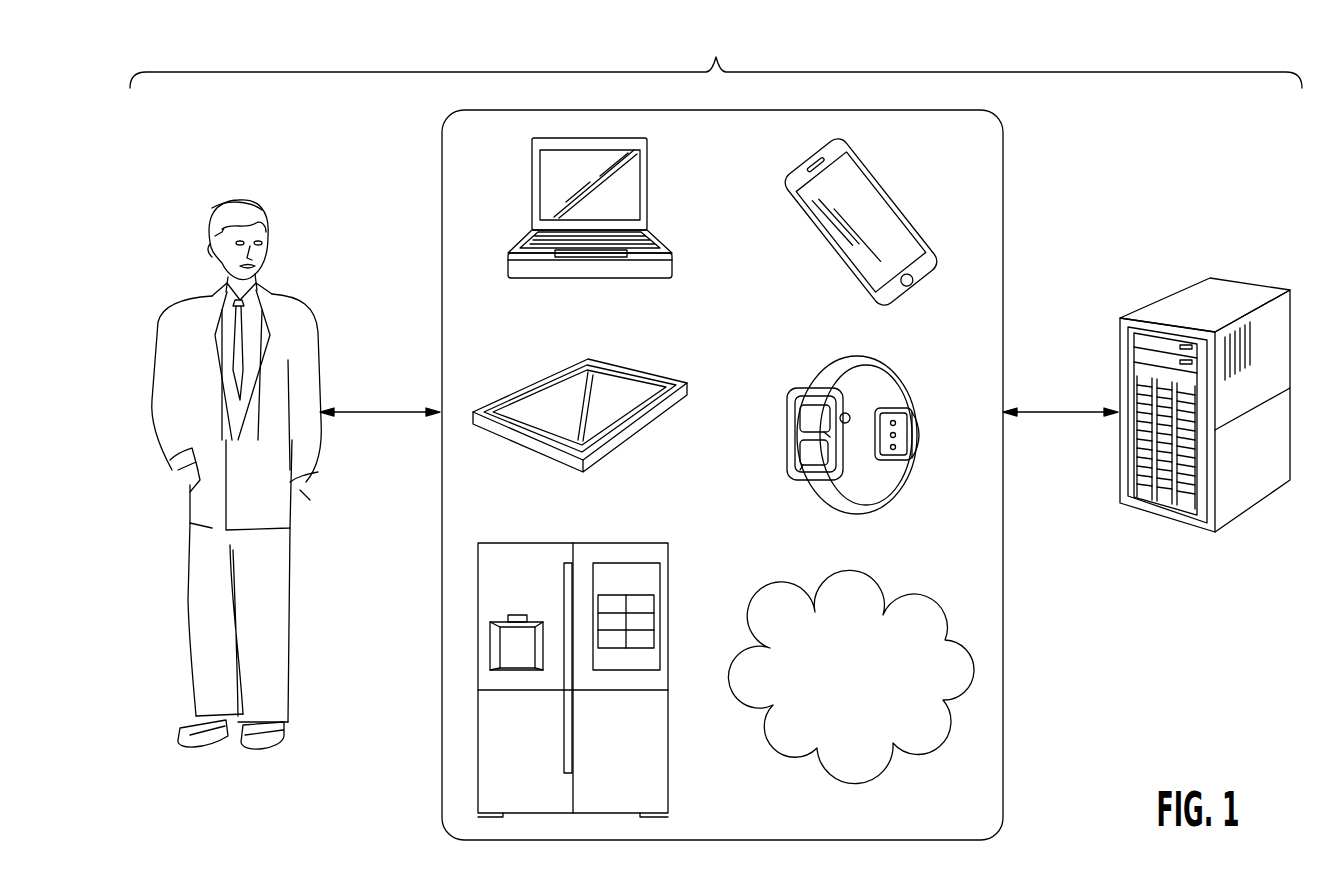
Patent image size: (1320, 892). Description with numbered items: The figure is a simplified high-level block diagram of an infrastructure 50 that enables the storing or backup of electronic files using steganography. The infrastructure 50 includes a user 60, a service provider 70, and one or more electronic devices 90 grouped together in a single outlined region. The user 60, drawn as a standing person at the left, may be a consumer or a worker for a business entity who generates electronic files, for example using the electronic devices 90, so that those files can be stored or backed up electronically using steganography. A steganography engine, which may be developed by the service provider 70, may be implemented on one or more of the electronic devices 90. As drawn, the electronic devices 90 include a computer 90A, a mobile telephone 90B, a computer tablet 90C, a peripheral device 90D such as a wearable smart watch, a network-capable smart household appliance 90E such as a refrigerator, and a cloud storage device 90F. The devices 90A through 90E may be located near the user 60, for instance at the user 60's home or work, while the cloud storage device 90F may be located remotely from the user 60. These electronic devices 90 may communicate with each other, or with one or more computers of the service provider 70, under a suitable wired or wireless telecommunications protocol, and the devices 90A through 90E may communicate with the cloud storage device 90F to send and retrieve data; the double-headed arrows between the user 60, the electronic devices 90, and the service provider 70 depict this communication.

The infrastructure 50 is at (716, 58).
The user 60 is at (178, 256).
The service provider 70 is at (1168, 273).
The electronic devices 90 is at (393, 179).
The computer 90A is at (647, 186).
The mobile telephone 90B is at (824, 211).
The computer tablet 90C is at (553, 392).
The peripheral device 90D is at (832, 372).
The network-capable smart household appliance 90E is at (668, 604).
The cloud storage device 90F is at (852, 769).